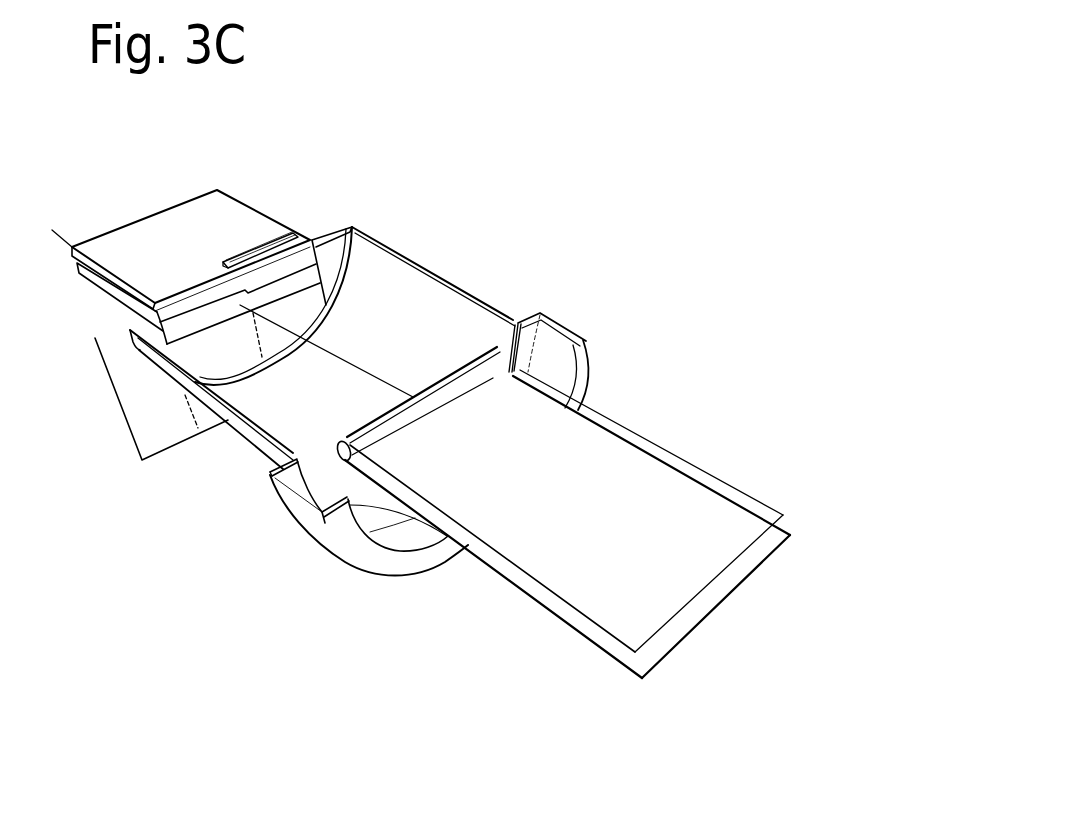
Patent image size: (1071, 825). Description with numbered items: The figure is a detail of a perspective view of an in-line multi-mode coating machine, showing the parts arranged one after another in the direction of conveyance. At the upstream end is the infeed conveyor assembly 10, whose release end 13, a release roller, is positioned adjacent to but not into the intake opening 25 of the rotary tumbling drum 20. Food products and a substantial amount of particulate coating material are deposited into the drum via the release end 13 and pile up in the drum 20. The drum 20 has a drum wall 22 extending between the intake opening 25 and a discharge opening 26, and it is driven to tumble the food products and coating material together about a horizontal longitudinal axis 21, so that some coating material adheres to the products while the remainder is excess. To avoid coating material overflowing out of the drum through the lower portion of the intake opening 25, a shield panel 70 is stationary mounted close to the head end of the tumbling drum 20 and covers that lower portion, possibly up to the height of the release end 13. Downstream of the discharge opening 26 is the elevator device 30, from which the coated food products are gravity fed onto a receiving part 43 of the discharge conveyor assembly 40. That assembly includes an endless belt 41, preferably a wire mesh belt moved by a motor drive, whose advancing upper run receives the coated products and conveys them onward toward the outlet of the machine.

The infeed conveyor assembly 10 is at (243, 193).
The release end 13 is at (300, 246).
The rotary tumbling drum 20 is at (468, 282).
The longitudinal axis 21 is at (342, 356).
The drum wall 22 is at (420, 325).
The intake opening 25 is at (332, 257).
The discharge opening 26 is at (508, 346).
The elevator device 30 is at (567, 325).
The discharge conveyor assembly 40 is at (639, 414).
The endless belt 41 is at (677, 508).
The receiving part 43 is at (485, 388).
The shield panel 70 is at (247, 356).